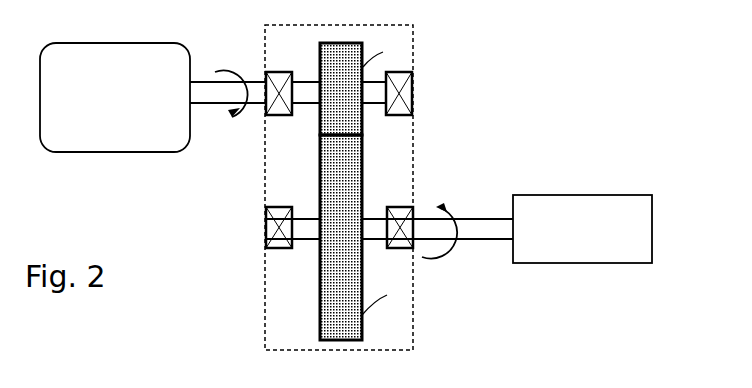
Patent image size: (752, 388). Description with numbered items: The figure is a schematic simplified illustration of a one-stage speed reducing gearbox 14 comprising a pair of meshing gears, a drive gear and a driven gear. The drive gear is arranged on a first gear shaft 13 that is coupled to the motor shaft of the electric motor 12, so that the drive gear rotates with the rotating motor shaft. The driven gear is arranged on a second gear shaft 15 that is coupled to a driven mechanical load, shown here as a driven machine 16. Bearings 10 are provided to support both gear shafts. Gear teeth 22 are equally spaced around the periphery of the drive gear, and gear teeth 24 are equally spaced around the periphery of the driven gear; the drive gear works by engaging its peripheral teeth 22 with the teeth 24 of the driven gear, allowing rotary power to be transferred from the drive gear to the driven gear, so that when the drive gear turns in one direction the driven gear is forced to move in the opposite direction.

The bearings 10 is at (410, 90).
The electric motor 12 is at (148, 153).
The first gear shaft 13 is at (200, 80).
The one-stage speed reducing gearbox 14 is at (258, 162).
The second gear shaft 15 is at (502, 242).
The driven machine 16 is at (570, 193).
The gear teeth of the drive gear 22 is at (330, 53).
The gear teeth of the driven gear 24 is at (333, 335).